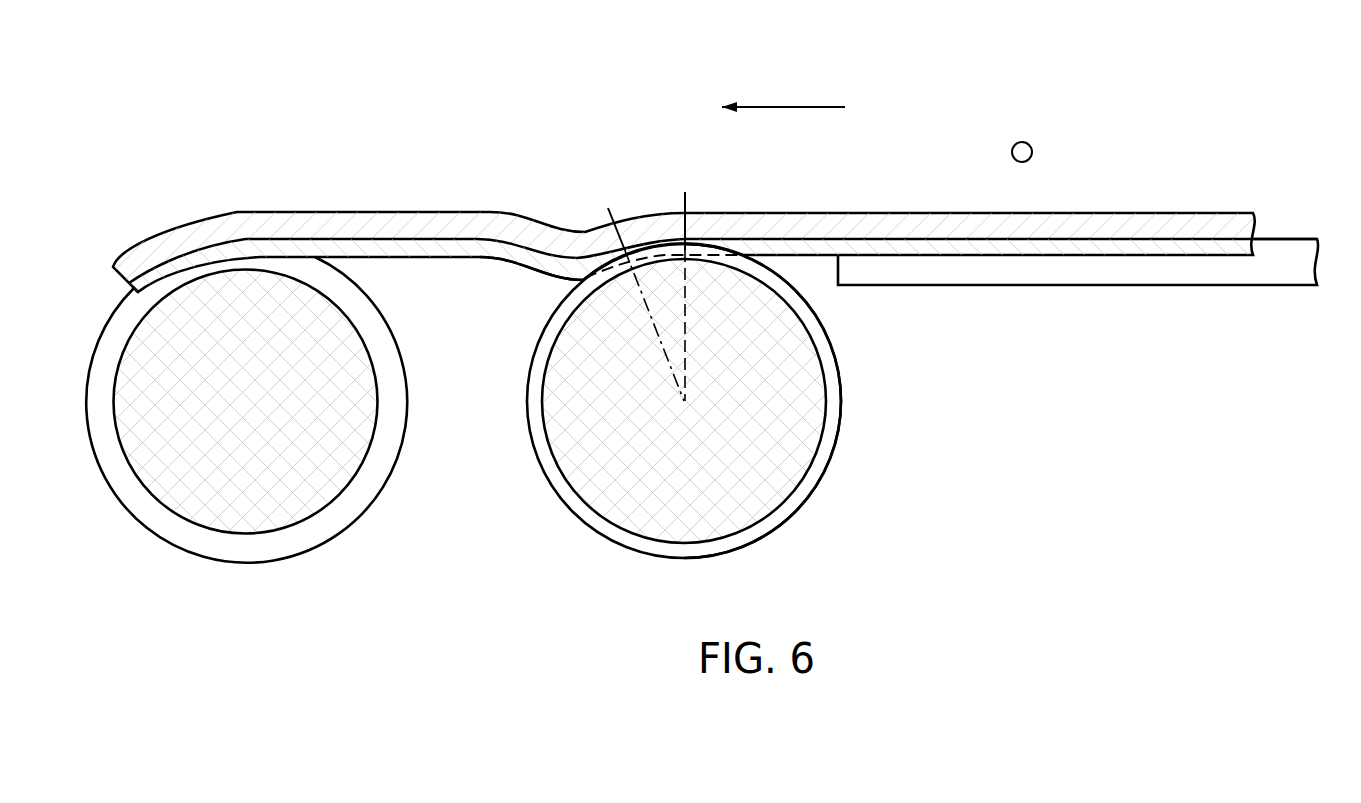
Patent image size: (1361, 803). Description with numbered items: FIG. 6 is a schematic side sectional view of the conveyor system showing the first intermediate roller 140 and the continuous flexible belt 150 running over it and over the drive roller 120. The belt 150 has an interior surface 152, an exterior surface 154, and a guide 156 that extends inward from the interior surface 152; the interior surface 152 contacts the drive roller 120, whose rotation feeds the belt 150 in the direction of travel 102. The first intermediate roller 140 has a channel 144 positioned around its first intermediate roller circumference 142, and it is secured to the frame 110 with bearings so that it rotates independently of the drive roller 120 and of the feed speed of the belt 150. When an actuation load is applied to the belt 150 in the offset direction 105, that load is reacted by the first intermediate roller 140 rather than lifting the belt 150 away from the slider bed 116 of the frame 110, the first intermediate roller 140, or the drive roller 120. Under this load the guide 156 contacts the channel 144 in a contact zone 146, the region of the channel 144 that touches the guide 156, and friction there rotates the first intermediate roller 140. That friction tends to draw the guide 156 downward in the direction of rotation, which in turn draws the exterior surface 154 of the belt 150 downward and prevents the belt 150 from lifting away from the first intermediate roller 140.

The direction of travel 102 is at (789, 105).
The offset direction 105 is at (1022, 142).
The frame 110 is at (1083, 212).
The slider bed 116 is at (1308, 238).
The drive roller 120 is at (246, 458).
The first intermediate roller 140 is at (743, 401).
The first intermediate roller circumference 142 is at (813, 490).
The channel 144 is at (830, 438).
The contact zone 146 is at (686, 180).
The continuous flexible belt 150 is at (684, 195).
The interior surface 152 is at (402, 240).
The exterior surface 154 is at (813, 211).
The guide 156 is at (515, 262).